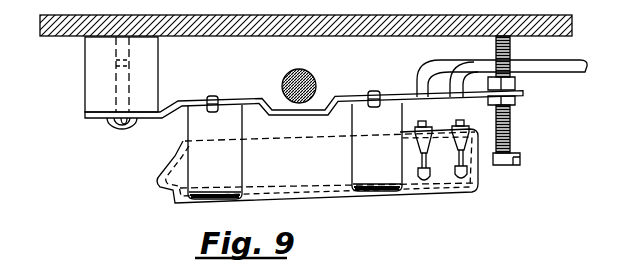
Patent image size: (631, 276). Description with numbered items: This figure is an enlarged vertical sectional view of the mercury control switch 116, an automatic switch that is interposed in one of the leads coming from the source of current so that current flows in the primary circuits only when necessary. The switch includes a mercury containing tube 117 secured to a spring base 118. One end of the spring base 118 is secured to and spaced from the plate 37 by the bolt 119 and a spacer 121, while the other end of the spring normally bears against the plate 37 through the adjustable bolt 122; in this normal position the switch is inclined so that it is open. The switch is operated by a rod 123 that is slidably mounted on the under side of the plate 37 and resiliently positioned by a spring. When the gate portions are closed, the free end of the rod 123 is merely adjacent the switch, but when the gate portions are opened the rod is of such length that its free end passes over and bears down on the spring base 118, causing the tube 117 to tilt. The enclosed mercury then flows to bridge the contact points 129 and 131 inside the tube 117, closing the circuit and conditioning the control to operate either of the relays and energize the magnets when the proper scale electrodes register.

The ceiling / support plate 37 is at (403, 15).
The mercury switch 116 is at (158, 162).
The mercury containing tube 117 is at (263, 145).
The spring base 118 is at (253, 101).
The bolt 119 is at (110, 124).
The spacer 121 is at (152, 59).
The adjustable bolt 122 is at (513, 118).
The rod 123 is at (316, 79).
The contact point 129 is at (423, 196).
The contact point 131 is at (471, 194).